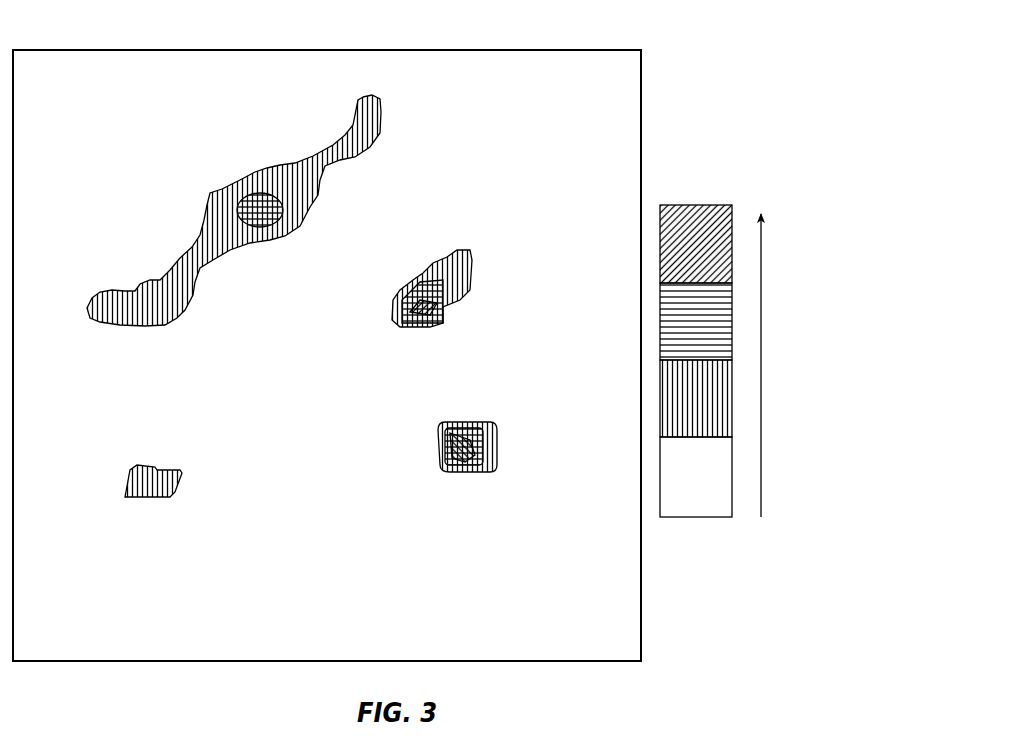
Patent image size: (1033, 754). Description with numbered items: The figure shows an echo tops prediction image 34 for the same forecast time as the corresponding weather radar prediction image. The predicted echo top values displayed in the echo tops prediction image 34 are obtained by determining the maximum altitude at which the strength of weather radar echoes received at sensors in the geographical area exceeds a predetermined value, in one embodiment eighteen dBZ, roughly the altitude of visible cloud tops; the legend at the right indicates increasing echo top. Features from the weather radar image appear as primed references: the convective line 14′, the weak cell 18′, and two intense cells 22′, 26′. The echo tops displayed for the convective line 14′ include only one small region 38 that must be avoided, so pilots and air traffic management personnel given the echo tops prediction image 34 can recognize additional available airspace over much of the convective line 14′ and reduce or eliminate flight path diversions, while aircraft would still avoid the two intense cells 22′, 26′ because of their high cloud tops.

The convective line 14′ is at (268, 276).
The small region 38 is at (253, 210).
The intense cell 22′ is at (478, 319).
The intense cell 26′ is at (500, 491).
The weak cell 18′ is at (170, 497).
The echo tops prediction image 34 is at (759, 78).